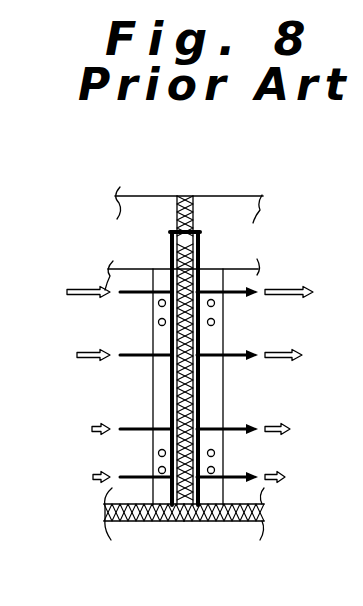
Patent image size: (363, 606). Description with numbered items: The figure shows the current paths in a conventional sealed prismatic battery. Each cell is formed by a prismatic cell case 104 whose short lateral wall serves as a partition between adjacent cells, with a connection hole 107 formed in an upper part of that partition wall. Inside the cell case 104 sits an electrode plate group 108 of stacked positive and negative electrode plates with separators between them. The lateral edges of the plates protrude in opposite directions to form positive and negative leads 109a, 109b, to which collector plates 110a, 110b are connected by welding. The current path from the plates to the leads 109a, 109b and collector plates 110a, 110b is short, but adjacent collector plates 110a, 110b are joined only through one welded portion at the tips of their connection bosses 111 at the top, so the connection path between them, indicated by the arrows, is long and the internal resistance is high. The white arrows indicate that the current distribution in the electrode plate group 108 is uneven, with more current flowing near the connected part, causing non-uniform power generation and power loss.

The cell case 104 is at (138, 256).
The connection hole 107 is at (178, 228).
The electrode plate group 108 is at (80, 388).
The positive lead 109a is at (212, 396).
The negative lead 109b is at (163, 402).
The collector plate 110a is at (212, 522).
The collector plate 110b is at (155, 522).
The connection boss 111 is at (204, 242).